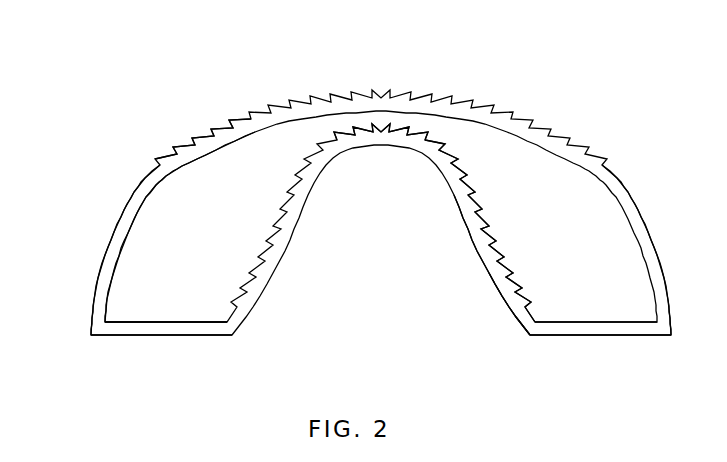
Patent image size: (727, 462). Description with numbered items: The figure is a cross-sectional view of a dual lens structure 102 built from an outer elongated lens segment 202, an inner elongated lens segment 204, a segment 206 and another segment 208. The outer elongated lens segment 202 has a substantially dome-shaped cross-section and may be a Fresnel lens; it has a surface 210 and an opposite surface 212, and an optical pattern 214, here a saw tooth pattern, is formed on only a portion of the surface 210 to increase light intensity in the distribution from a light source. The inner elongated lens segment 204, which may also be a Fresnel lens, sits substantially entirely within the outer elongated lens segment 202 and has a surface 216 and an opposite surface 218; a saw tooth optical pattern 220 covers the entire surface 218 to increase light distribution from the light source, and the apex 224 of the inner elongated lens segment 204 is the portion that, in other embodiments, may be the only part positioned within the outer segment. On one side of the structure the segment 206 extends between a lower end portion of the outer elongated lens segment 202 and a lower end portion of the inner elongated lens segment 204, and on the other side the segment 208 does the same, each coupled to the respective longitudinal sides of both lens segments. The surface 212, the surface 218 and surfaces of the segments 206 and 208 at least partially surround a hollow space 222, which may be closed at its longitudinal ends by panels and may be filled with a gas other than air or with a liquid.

The dual lens structure 102 is at (102, 79).
The outer elongated lens segment 202 is at (631, 188).
The inner elongated lens segment 204 is at (469, 243).
The segment 206 is at (140, 337).
The segment 208 is at (610, 334).
The surface 210 is at (130, 182).
The surface 212 is at (129, 207).
The optical pattern 214 is at (214, 119).
The surface 216 is at (479, 280).
The surface 218 is at (502, 298).
The optical pattern 220 is at (451, 185).
The hollow space 222 is at (158, 245).
The apex 224 is at (377, 147).